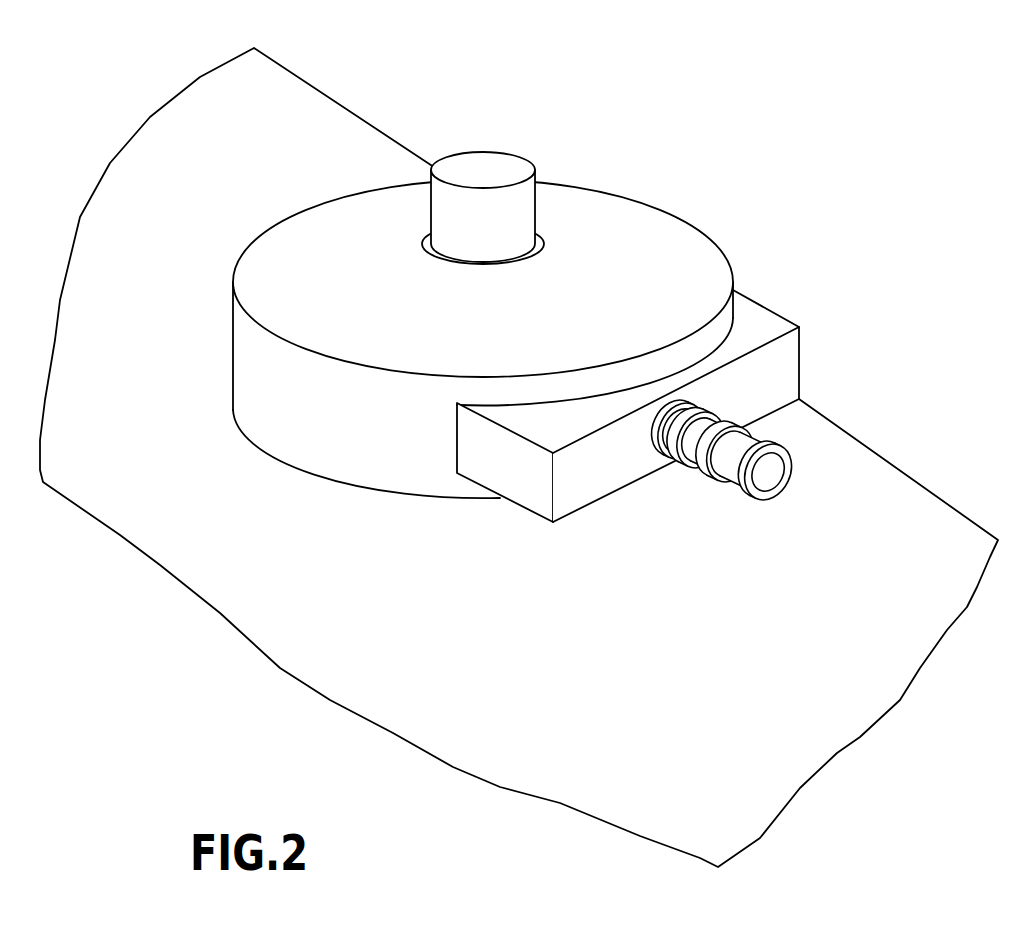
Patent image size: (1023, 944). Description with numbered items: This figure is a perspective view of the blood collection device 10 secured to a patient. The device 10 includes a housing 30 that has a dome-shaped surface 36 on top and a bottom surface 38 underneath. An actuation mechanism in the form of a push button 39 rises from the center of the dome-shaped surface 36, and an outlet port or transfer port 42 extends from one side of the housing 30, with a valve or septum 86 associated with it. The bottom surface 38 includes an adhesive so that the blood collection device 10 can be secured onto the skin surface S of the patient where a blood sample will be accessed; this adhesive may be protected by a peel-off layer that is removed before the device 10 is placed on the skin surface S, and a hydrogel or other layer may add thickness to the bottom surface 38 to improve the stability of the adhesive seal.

The blood collection device 10 is at (527, 335).
The housing 30 is at (232, 358).
The dome-shaped surface 36 is at (318, 238).
The bottom surface 38 is at (333, 482).
The push button 39 is at (495, 167).
The transfer port 42 is at (778, 442).
The septum 86 is at (760, 483).
The skin surface S is at (705, 738).